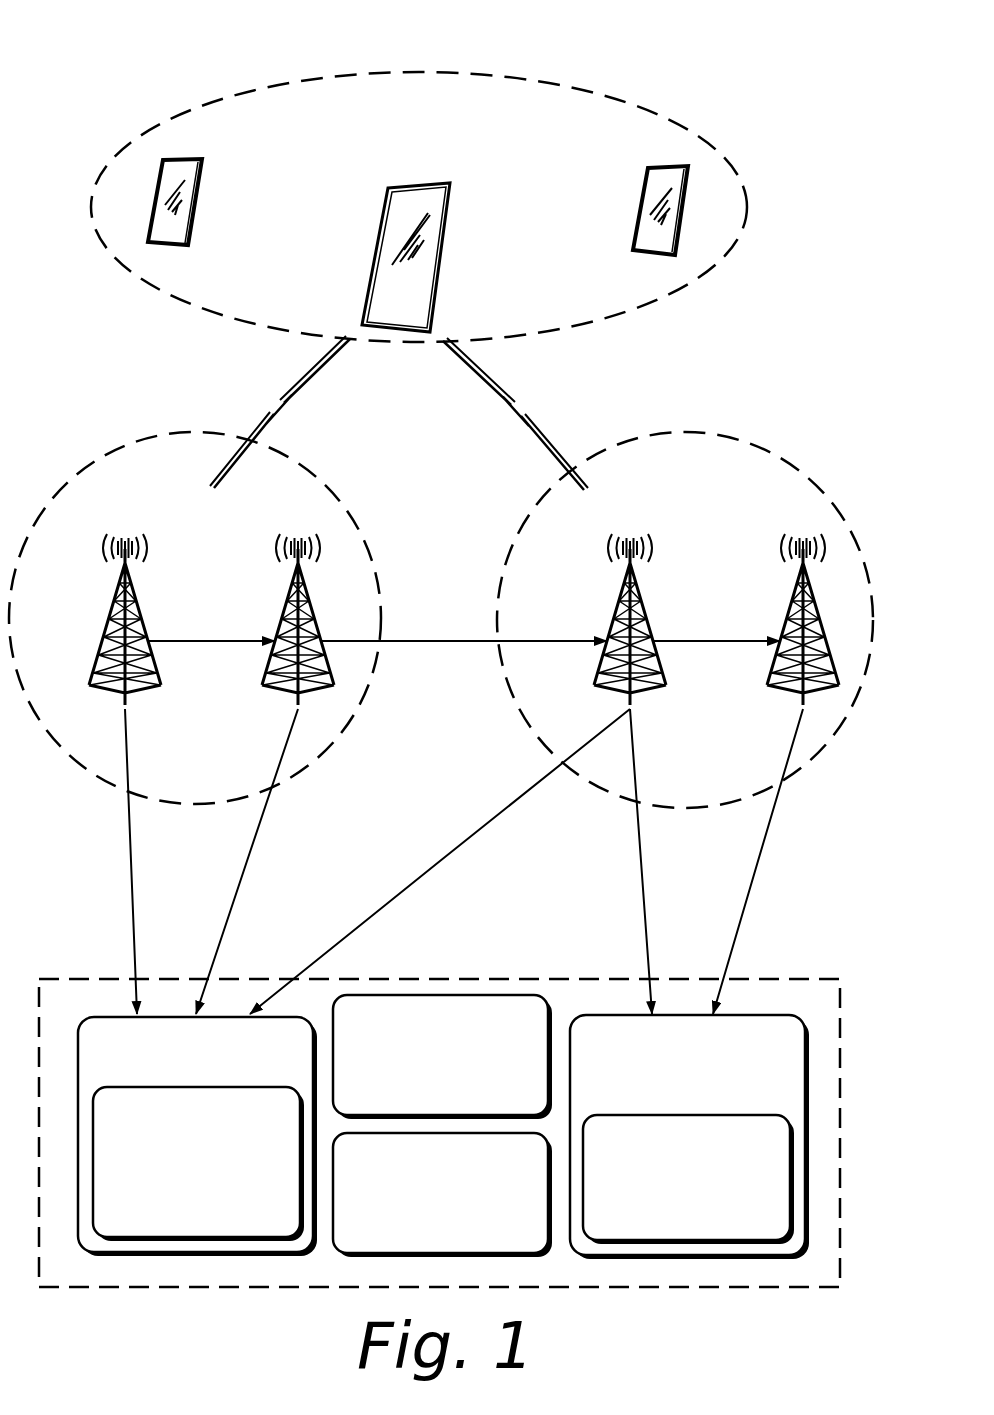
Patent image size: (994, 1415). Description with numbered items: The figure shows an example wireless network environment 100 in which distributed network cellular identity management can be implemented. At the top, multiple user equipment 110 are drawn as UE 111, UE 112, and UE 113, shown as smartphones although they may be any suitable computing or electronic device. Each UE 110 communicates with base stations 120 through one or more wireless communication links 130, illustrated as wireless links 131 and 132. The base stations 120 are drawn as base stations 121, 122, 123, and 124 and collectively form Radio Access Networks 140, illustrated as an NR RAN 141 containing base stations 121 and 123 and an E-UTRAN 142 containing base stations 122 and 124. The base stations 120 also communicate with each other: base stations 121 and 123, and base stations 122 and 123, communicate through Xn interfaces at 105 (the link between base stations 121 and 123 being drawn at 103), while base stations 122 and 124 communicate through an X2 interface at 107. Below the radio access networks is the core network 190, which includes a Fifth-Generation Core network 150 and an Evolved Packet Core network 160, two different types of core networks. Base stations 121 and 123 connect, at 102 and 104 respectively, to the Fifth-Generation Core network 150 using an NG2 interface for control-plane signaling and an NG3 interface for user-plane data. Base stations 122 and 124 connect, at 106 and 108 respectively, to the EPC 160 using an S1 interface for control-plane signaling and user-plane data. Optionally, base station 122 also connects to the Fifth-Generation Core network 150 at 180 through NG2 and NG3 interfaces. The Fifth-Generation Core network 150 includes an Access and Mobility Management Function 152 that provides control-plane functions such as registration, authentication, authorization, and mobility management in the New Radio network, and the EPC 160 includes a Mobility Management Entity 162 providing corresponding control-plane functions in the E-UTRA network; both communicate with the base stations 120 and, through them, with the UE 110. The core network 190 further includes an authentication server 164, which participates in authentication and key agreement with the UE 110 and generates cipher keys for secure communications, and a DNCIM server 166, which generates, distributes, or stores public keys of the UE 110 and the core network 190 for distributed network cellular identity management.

The environment 100 is at (134, 47).
The user equipment 110 is at (664, 117).
The UE 111 is at (456, 184).
The UE 112 is at (207, 159).
The UE 113 is at (647, 169).
The wireless communication links 130 is at (521, 367).
The wireless link 131 is at (265, 411).
The wireless link 132 is at (534, 417).
The Radio Access Network 140 is at (436, 451).
The NR RAN 141 is at (339, 493).
The E-UTRAN 142 is at (543, 493).
The base stations 120 is at (184, 511).
The base station 121 is at (110, 601).
The base station 122 is at (617, 602).
The base station 123 is at (285, 602).
The base station 124 is at (792, 602).
The inter-base-station interface 103 is at (242, 649).
The Xn interface connection 105 is at (476, 648).
The X2 interface connection 107 is at (761, 648).
The connection to 5GC 102 is at (137, 854).
The connection to 5GC 104 is at (253, 854).
The connection to EPC 106 is at (635, 854).
The connection to EPC 108 is at (757, 854).
The connection to 5GC 180 is at (417, 889).
The core network 190 is at (490, 973).
The Fifth-Generation Core network 150 is at (178, 1078).
The Access and Mobility Management Function 152 is at (179, 1225).
The authentication server 164 is at (423, 1093).
The distributed-network cellular-identity-management server 166 is at (423, 1216).
The Evolved Packet Core network 160 is at (670, 1103).
The Mobility Management Entity 162 is at (669, 1228).